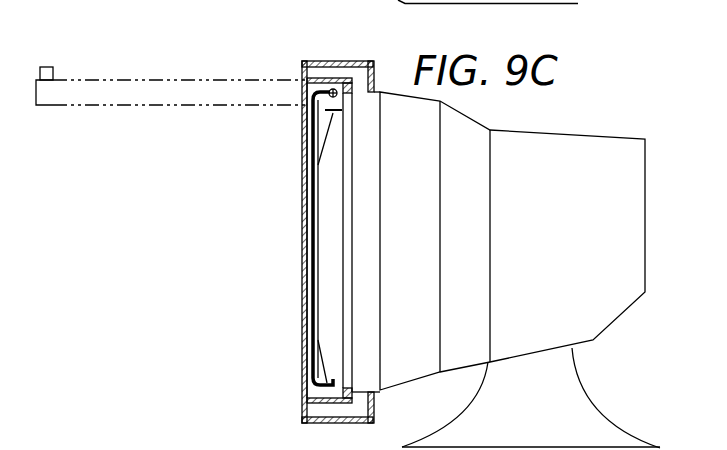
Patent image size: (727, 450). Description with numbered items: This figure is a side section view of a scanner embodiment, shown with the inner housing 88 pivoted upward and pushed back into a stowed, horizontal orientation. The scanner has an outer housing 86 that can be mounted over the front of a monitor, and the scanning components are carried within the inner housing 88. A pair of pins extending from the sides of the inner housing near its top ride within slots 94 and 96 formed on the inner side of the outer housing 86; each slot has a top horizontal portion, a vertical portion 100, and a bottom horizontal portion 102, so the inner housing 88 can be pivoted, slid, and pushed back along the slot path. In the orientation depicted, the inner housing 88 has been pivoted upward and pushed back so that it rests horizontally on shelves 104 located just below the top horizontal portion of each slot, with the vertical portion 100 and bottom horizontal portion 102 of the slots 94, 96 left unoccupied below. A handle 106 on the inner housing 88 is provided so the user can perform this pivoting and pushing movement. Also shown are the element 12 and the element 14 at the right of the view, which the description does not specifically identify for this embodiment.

The housing 12 is at (605, 152).
The stand 14 is at (580, 418).
The outer housing 86 is at (326, 58).
The inner housing 88 is at (168, 78).
The slot 94 is at (310, 287).
The slot 96 is at (264, 444).
The vertical portion 100 is at (315, 218).
The bottom horizontal portion 102 is at (328, 382).
The shelf 104 is at (329, 117).
The handle 106 is at (48, 67).